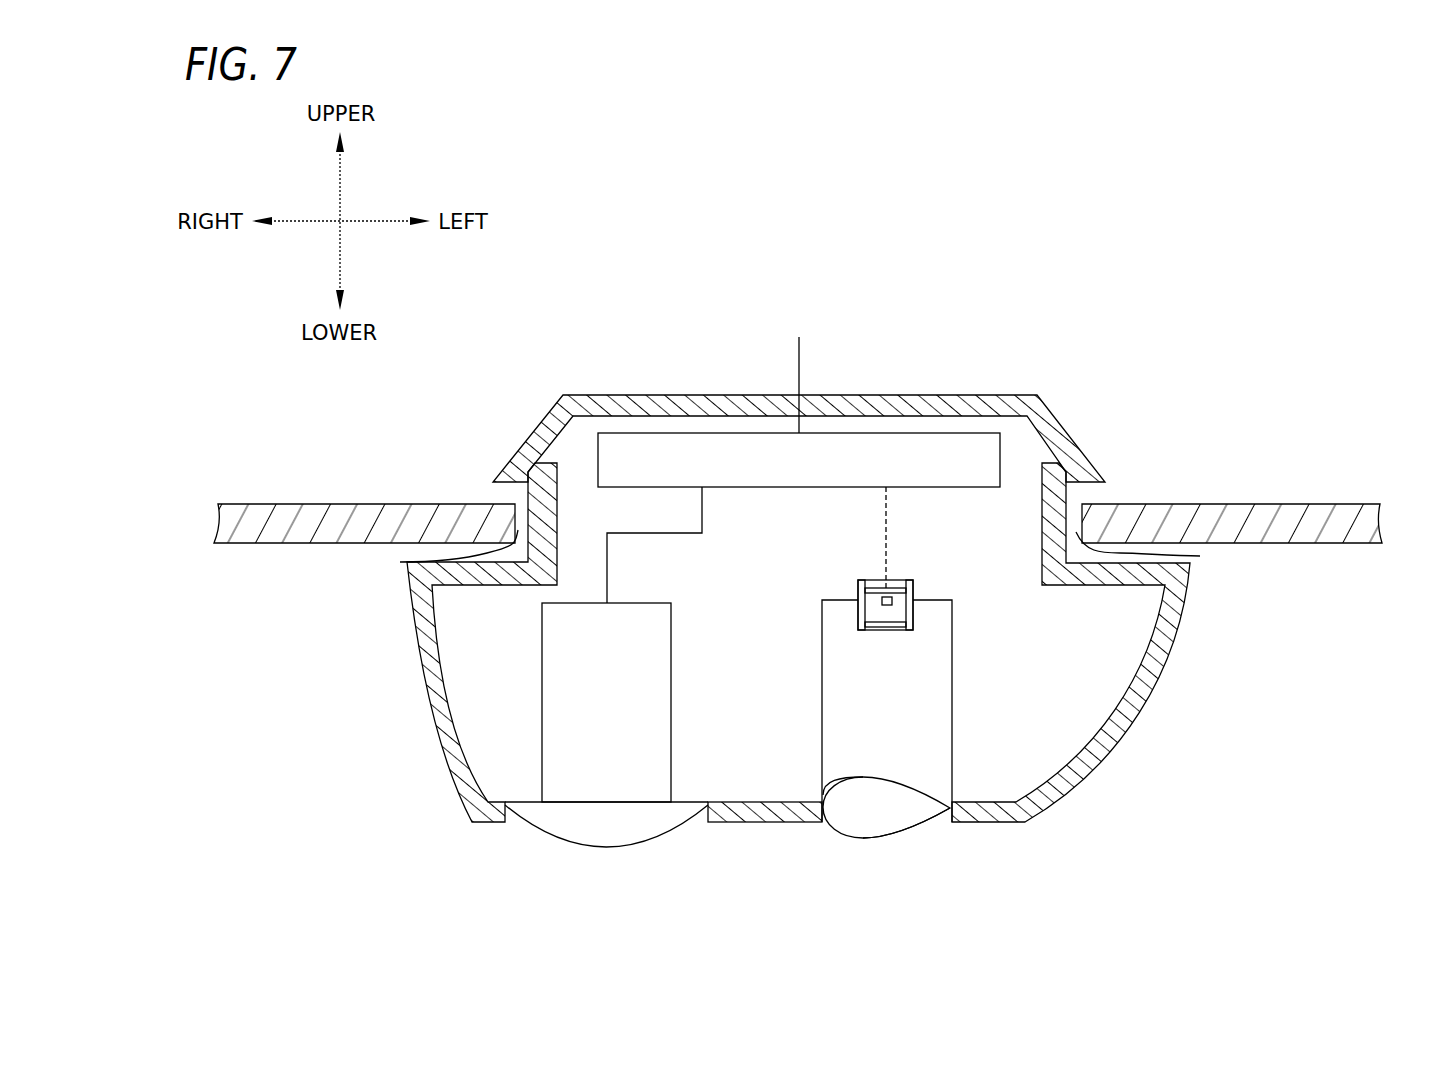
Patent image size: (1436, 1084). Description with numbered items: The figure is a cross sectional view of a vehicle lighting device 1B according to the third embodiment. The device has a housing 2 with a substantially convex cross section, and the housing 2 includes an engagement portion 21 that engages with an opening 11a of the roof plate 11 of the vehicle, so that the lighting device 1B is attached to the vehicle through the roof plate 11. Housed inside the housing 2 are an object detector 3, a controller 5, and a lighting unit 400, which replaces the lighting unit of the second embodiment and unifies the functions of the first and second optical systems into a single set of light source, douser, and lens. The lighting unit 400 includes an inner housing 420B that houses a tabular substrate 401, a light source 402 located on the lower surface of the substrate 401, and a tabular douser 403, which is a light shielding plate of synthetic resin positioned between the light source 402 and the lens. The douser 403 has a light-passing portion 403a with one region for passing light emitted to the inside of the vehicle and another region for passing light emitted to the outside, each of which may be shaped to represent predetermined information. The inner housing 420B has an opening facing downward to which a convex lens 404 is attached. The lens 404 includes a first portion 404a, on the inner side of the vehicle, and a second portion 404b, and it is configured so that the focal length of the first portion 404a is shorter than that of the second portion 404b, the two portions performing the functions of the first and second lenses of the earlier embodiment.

The lighting device 1B is at (1010, 320).
The housing 2 is at (1147, 693).
The engagement portion 21 is at (493, 482).
The object detector 3 is at (543, 660).
The controller 5 is at (675, 433).
The roof plate 11 is at (273, 545).
The opening 11a is at (400, 562).
The lighting unit 400 is at (931, 728).
The substrate 401 is at (893, 593).
The light source 402 is at (882, 603).
The douser 403 is at (893, 631).
The light-passing portion 403a is at (875, 631).
The lens 404 is at (901, 873).
The first portion 404a is at (837, 832).
The second portion 404b is at (917, 827).
The inner housing 420B is at (953, 715).